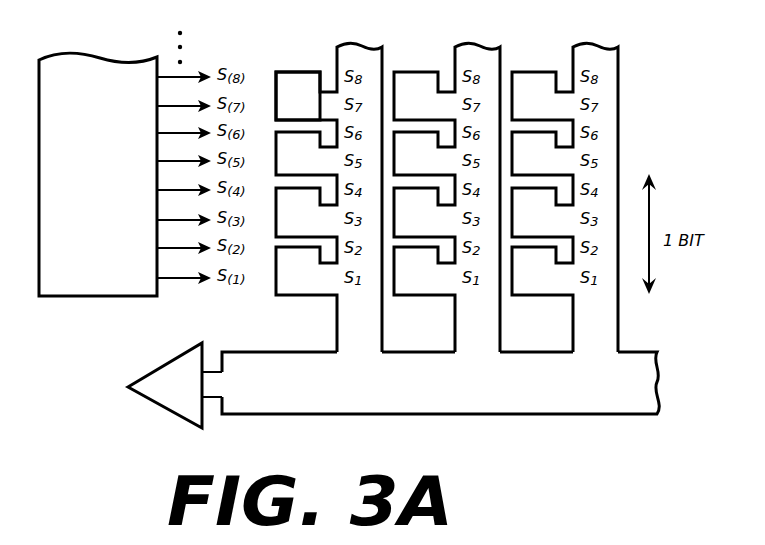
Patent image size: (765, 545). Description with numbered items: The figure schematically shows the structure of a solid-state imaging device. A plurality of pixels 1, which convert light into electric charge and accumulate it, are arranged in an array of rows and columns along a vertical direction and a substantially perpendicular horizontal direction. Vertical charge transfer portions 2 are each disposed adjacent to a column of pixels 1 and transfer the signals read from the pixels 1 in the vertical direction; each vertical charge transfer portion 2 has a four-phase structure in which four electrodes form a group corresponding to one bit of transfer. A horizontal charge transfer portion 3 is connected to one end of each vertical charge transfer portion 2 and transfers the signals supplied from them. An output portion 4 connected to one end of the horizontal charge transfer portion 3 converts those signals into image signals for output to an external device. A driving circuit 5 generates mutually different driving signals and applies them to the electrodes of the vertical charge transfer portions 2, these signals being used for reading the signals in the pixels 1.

The pixel 1 is at (298, 83).
The vertical charge transfer portion 2 is at (366, 60).
The horizontal charge transfer portion 3 is at (346, 396).
The output portion 4 is at (176, 395).
The driving circuit 5 is at (118, 78).